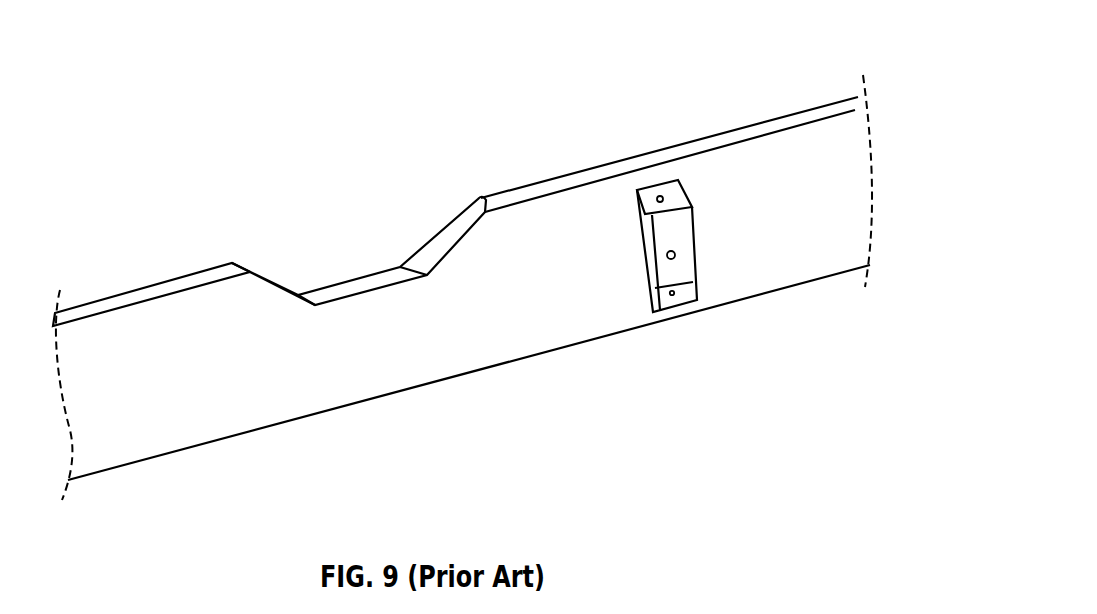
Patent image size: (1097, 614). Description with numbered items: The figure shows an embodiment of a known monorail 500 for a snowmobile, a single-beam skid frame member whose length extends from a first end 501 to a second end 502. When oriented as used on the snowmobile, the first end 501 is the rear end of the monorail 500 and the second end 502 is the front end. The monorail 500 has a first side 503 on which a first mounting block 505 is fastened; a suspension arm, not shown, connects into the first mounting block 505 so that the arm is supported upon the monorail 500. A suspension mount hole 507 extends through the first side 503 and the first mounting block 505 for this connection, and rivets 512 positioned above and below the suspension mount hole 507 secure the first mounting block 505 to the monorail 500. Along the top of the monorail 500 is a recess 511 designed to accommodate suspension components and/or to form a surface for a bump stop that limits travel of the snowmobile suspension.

The monorail 500 is at (128, 30).
The first end 501 is at (850, 250).
The second end 502 is at (83, 450).
The first side 503 is at (392, 335).
The first mounting block 505 is at (676, 226).
The suspension mount hole 507 is at (676, 255).
The recess 511 is at (355, 280).
The rivets 512 is at (657, 199).